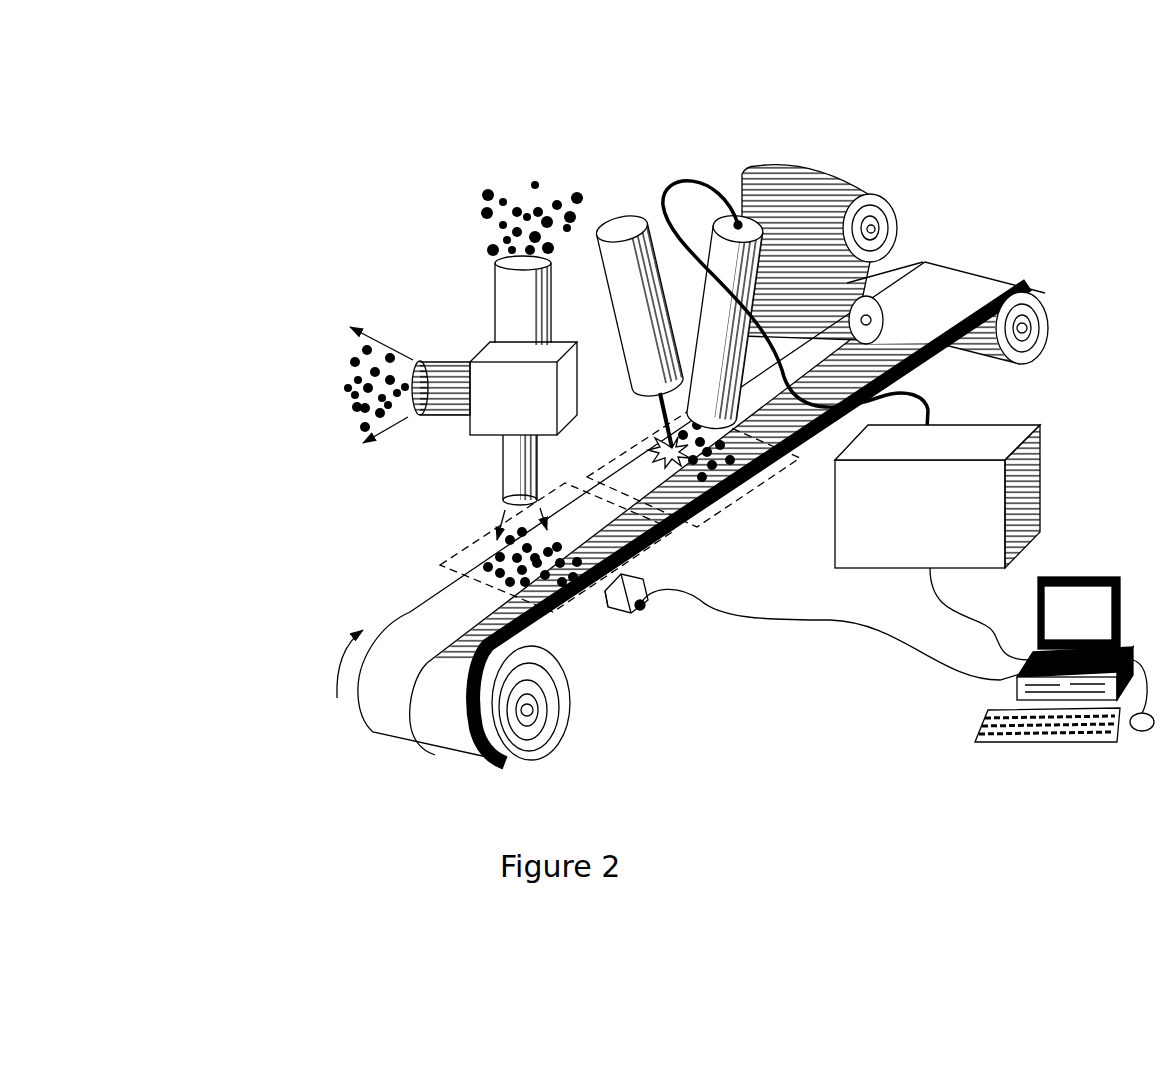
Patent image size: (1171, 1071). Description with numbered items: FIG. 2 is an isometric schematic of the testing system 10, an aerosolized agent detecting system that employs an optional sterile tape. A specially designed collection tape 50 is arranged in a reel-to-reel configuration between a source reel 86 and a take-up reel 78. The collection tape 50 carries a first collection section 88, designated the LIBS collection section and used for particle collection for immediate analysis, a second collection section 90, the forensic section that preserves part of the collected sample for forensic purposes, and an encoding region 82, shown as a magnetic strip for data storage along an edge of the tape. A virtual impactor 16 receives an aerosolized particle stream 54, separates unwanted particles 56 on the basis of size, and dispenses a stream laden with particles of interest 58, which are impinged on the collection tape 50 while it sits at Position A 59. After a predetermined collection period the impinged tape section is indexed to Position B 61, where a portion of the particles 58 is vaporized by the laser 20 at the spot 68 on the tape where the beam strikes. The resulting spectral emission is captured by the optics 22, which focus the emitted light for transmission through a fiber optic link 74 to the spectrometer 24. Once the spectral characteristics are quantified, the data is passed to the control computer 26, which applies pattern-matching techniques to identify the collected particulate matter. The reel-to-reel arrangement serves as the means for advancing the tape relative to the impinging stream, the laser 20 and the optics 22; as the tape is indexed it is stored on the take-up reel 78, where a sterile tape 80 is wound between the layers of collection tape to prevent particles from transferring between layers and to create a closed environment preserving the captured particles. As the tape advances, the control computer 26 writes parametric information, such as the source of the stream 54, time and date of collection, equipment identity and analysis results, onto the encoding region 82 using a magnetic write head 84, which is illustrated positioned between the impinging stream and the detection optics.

The testing system 10 is at (300, 277).
The virtual impactor 16 is at (493, 385).
The laser 20 is at (623, 216).
The optics 22 is at (738, 222).
The spectrometer 24 is at (1040, 508).
The control computer 26 is at (1088, 757).
The collection tape 50 is at (405, 612).
The aerosolized particle stream 54 is at (575, 128).
The unwanted particles 56 is at (327, 391).
The particles of interest 58 is at (455, 562).
The Position A 59 is at (590, 617).
The Position B 61 is at (758, 502).
The laser spark 68 is at (658, 446).
The fiber optic link 74 is at (930, 403).
The take-up reel 78 is at (1031, 302).
The sterile tape 80 is at (888, 212).
The encoding region 82 is at (492, 764).
The magnetic write head 84 is at (643, 608).
The source reel 86 is at (530, 712).
The first collection section 88 is at (388, 692).
The second collection section 90 is at (445, 712).